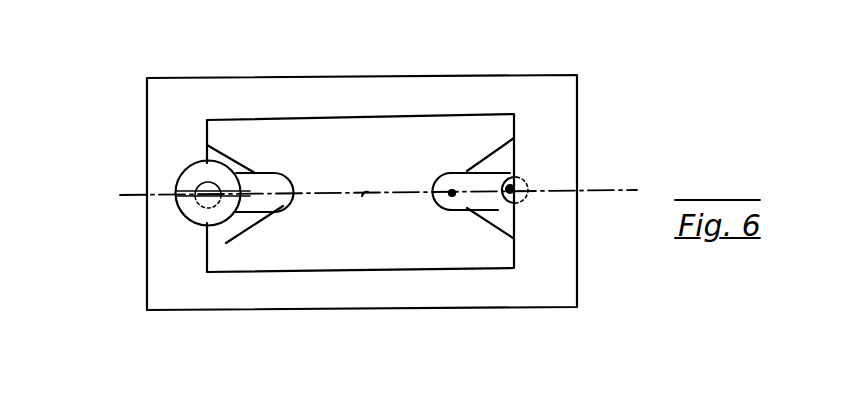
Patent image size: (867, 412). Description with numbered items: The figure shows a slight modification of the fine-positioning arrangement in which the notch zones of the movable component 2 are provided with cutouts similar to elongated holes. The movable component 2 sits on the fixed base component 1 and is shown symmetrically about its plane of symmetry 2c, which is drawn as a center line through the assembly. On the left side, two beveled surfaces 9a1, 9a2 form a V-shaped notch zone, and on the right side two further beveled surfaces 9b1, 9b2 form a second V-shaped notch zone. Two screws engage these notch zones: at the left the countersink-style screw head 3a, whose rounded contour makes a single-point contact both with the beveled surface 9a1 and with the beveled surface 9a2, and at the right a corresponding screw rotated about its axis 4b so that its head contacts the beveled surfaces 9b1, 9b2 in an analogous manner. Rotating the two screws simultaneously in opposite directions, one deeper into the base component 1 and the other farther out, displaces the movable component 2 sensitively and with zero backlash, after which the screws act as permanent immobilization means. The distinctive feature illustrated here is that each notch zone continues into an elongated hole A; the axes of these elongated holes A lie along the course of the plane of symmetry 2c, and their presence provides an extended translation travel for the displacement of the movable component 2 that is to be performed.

The fixed base component 1 is at (562, 129).
The movable component 2 is at (322, 161).
The plane of symmetry 2c is at (366, 190).
The screw head 3a is at (200, 212).
The screw axis 4b is at (517, 190).
The beveled surface of V-shaped notch zone 9a1 is at (217, 157).
The beveled surface of V-shaped notch zone 9a2 is at (217, 228).
The beveled surface of V-shaped notch zone 9b1 is at (495, 167).
The beveled surface of V-shaped notch zone 9b2 is at (498, 219).
The elongated holes A is at (268, 198).